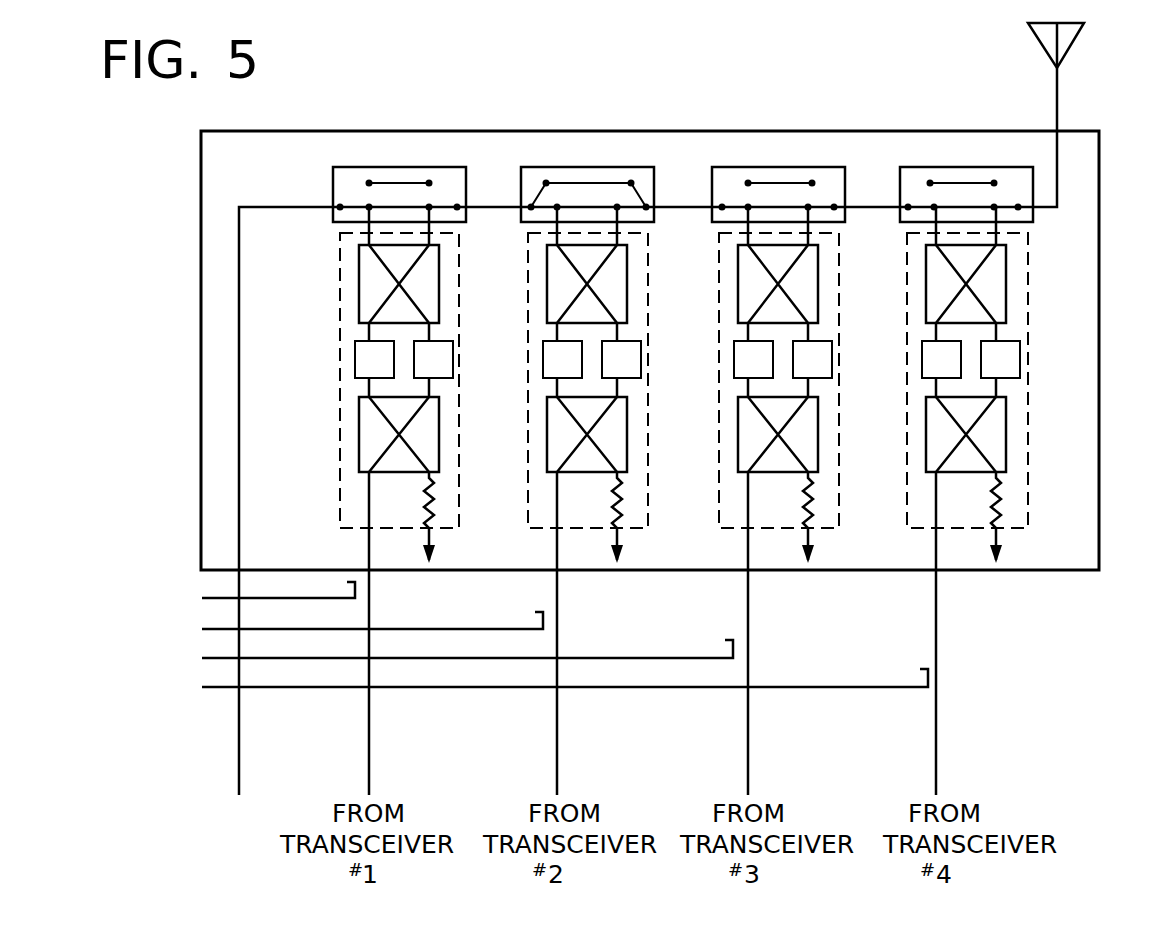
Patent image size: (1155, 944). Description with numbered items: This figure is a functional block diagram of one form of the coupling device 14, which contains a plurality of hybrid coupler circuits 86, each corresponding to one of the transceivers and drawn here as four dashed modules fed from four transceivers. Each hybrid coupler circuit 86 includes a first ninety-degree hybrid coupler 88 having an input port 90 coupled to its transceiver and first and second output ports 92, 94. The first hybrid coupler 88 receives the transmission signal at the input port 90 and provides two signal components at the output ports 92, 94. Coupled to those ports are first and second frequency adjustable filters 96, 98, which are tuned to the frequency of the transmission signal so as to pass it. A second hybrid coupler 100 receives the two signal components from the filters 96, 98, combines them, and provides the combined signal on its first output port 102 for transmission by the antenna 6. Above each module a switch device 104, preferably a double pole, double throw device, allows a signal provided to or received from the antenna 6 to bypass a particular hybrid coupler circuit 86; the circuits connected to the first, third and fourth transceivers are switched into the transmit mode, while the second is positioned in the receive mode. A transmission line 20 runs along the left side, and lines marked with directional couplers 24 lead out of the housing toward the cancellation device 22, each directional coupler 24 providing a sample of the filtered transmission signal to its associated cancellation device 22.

The antenna 6 is at (1080, 42).
The coupling device 14 is at (691, 131).
The transmission line 20 is at (239, 754).
The cancellation device 22 is at (102, 639).
The directional coupler 24 is at (356, 590).
The hybrid coupler circuit 86 is at (528, 528).
The first 90° hybrid coupler 88 is at (359, 437).
The input port 90 is at (370, 470).
The first output port 92 is at (367, 393).
The second output port 94 is at (431, 393).
The first frequency adjustable filter 96 is at (355, 358).
The second frequency adjustable filter 98 is at (455, 356).
The second hybrid coupler 100 is at (359, 257).
The first output port of the second hybrid coupler 102 is at (431, 235).
The switch device 104 is at (521, 167).